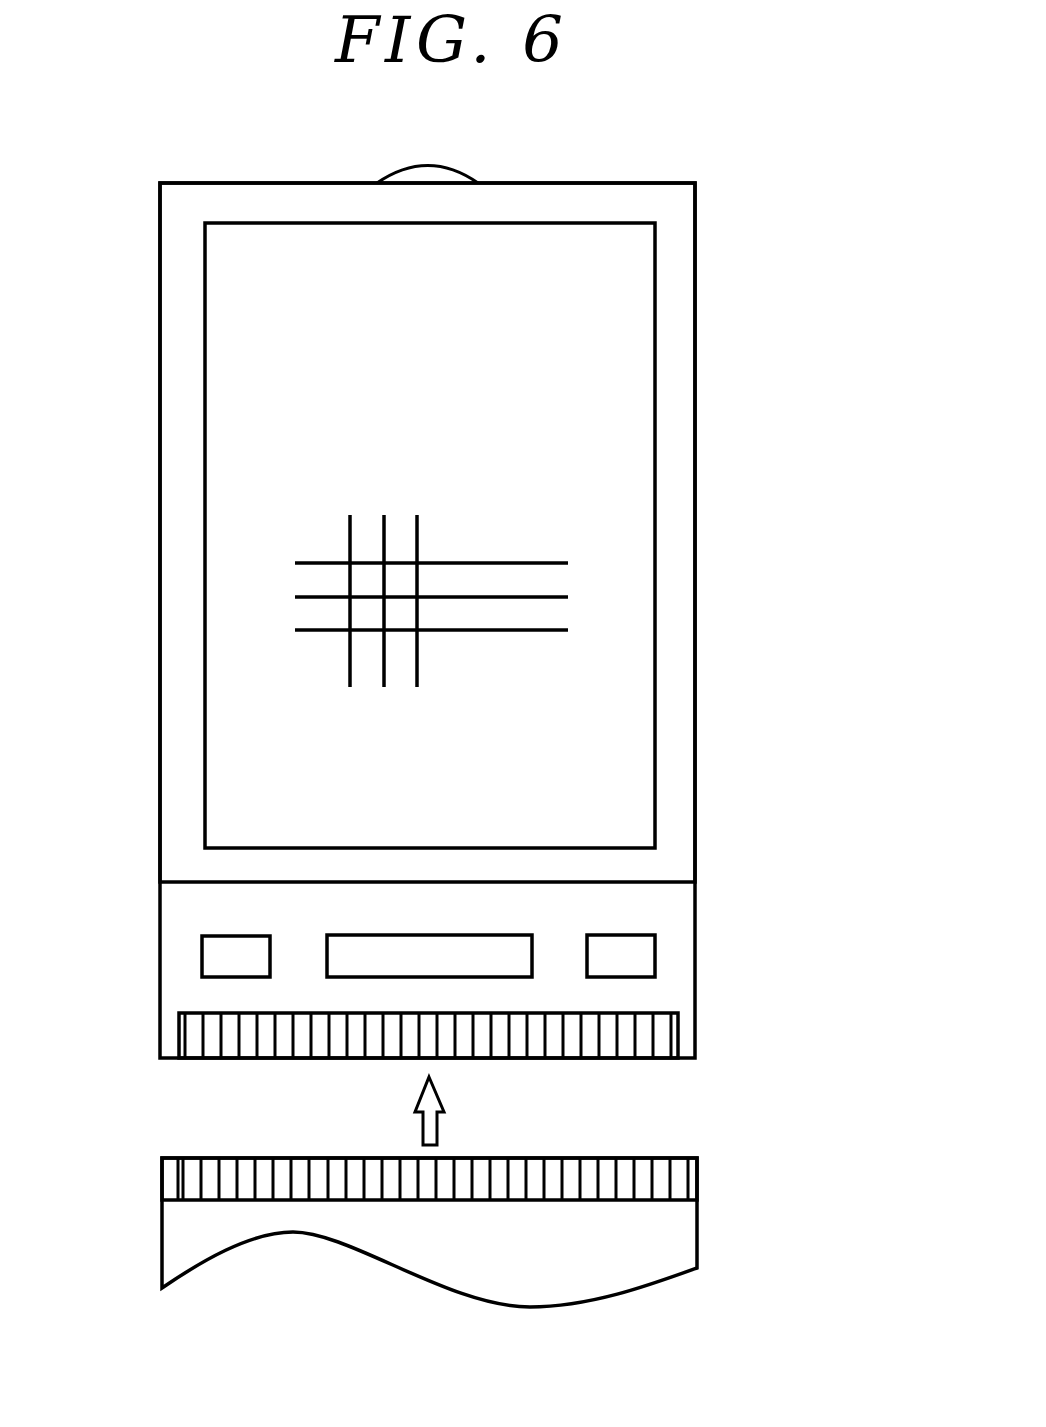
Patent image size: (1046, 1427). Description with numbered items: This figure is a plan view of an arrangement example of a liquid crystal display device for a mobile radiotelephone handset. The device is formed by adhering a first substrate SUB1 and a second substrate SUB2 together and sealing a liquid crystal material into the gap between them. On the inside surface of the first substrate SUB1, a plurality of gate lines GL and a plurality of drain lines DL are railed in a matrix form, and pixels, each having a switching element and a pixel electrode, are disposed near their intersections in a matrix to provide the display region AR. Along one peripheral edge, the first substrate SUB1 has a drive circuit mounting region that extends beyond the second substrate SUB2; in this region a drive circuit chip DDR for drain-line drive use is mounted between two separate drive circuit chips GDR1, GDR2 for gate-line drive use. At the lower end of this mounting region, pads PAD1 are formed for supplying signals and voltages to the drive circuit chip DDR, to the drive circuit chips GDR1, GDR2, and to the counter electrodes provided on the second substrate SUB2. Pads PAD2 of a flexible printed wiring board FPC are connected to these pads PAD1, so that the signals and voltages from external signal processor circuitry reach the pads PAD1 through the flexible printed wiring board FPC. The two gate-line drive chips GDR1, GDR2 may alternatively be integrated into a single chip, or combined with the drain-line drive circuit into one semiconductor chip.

The first substrate SUB1 is at (685, 918).
The second substrate SUB2 is at (685, 849).
The display region AR is at (470, 466).
The drain lines DL is at (350, 540).
The gate lines GL is at (510, 562).
The drive circuit chip for gate-line drive use GDR1 is at (217, 957).
The drive circuit chip for drain-line drive use DDR is at (429, 956).
The drive circuit chip for gate-line drive use GDR2 is at (657, 955).
The pads PAD1 is at (638, 1047).
The pads of flexible printed wiring board PAD2 is at (658, 1167).
The flexible printed wiring board FPC is at (670, 1232).